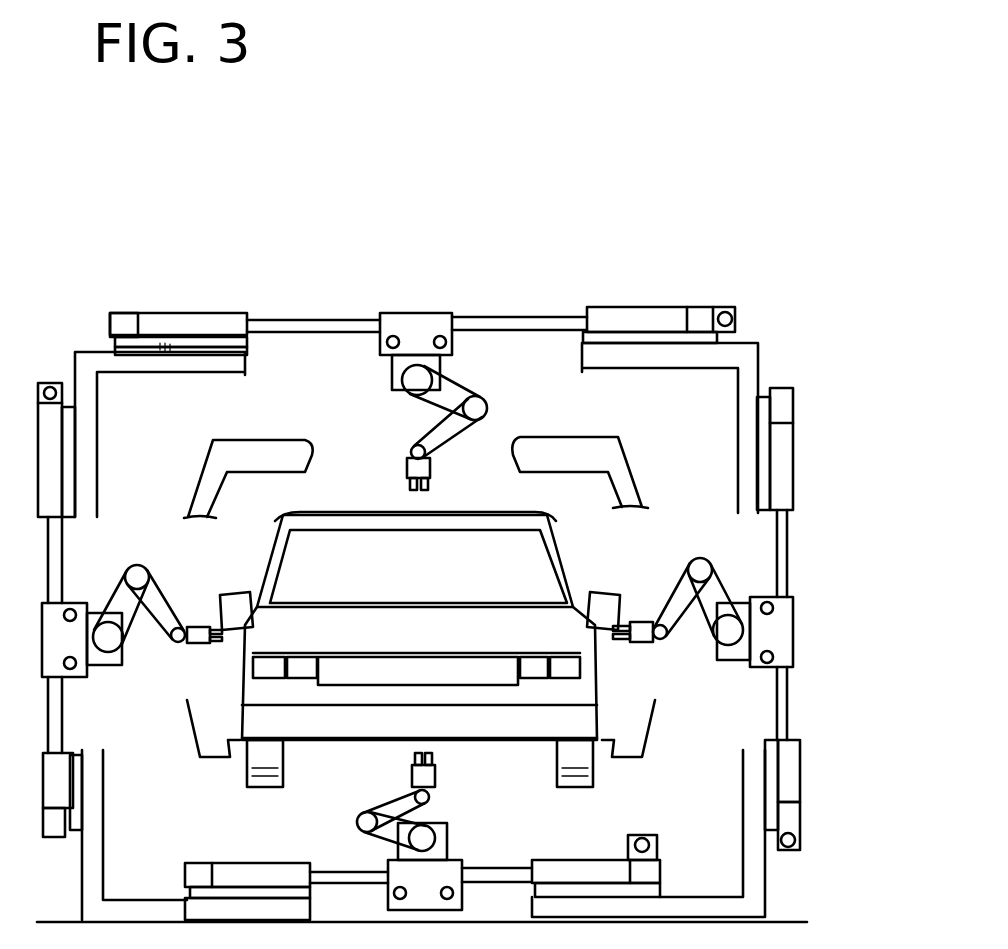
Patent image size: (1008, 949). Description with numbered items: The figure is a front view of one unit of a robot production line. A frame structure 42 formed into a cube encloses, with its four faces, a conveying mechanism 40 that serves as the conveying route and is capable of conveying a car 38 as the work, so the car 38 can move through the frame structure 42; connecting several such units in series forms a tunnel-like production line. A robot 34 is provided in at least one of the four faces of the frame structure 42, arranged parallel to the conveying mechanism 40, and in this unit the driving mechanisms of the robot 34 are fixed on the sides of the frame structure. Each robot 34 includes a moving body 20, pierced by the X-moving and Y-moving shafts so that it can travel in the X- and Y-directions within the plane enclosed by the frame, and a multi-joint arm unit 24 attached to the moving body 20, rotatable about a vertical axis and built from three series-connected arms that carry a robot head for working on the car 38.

The moving body 20 is at (412, 330).
The multi-joint arm unit 24 is at (465, 375).
The robot 34 is at (660, 292).
The car 38 is at (480, 548).
The conveying mechanism 40 is at (590, 450).
The frame structure 42 is at (203, 360).